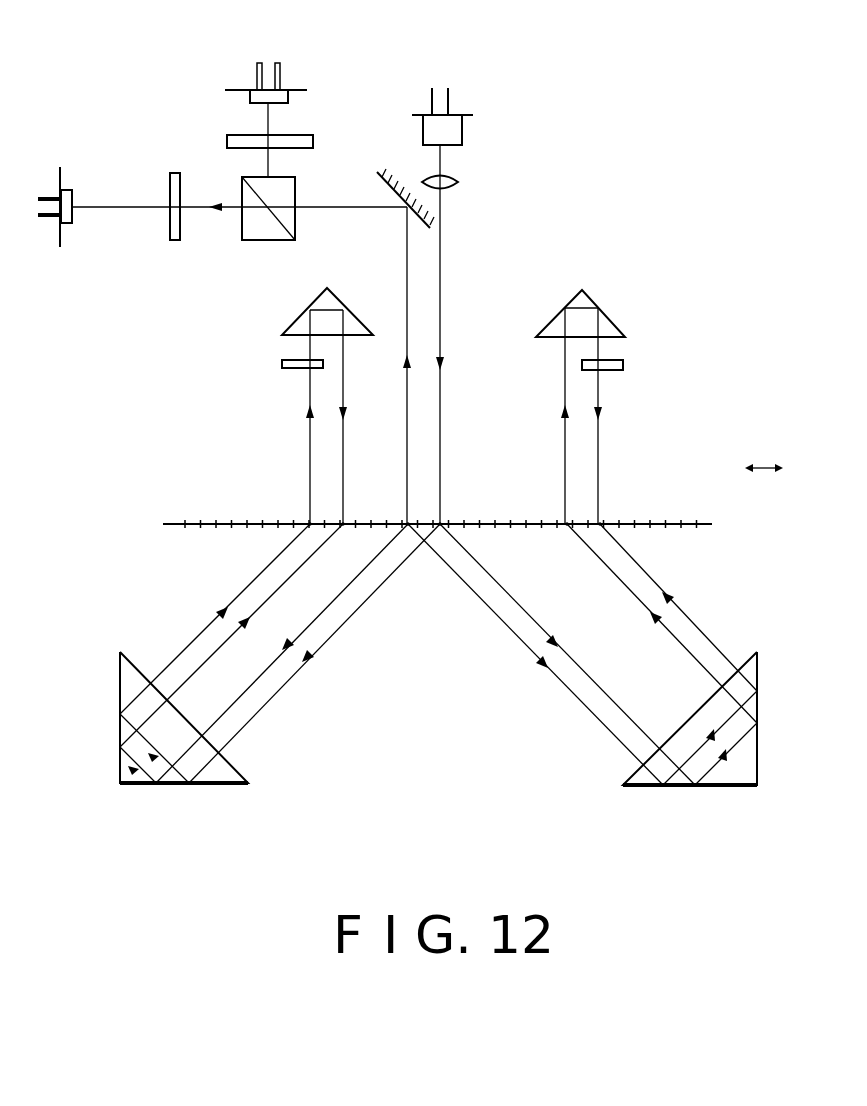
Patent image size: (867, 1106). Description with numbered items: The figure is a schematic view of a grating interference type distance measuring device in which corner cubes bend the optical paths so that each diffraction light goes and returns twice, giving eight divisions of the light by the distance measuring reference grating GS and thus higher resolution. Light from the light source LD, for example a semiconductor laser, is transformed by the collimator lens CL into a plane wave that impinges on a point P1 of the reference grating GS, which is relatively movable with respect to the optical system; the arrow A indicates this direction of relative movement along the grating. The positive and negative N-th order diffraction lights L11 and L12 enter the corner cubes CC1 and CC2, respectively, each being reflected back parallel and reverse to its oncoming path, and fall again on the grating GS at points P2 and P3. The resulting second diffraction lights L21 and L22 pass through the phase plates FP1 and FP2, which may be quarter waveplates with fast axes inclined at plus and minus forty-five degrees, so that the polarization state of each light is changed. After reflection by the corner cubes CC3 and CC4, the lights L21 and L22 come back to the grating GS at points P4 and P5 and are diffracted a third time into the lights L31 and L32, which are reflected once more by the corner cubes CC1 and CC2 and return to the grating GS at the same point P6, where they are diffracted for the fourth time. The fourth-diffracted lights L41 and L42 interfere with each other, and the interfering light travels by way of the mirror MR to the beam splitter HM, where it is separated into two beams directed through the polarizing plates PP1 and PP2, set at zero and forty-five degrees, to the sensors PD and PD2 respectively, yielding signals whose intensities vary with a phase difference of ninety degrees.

The sensor PD is at (68, 228).
The sensor PD2 is at (253, 90).
The polarizing plate PP1 is at (172, 188).
The polarizing plate PP2 is at (310, 140).
The beam splitter HM is at (247, 192).
The mirror MR is at (398, 190).
The light source LD is at (462, 133).
The collimator lens CL is at (458, 182).
The corner cube CC1 is at (168, 787).
The corner cube CC2 is at (722, 778).
The corner cube CC3 is at (298, 325).
The corner cube CC4 is at (603, 320).
The phase plate FP1 is at (282, 364).
The phase plate FP2 is at (623, 366).
The N-th order diffraction light L11 is at (340, 625).
The N-th order diffraction light L12 is at (528, 613).
The diffracted light L21 is at (310, 445).
The diffracted light L22 is at (565, 448).
The diffraction light L31 is at (262, 607).
The diffraction light L32 is at (690, 618).
The fourth-diffracted light L41 is at (407, 405).
The fourth-diffracted light L42 is at (343, 470).
The point P1 is at (459, 508).
The point P2 is at (289, 508).
The point P3 is at (547, 510).
The point P4 is at (361, 496).
The point P5 is at (617, 510).
The point P6 is at (389, 508).
The distance measuring reference grating GS is at (712, 524).
The direction of movement A is at (764, 452).